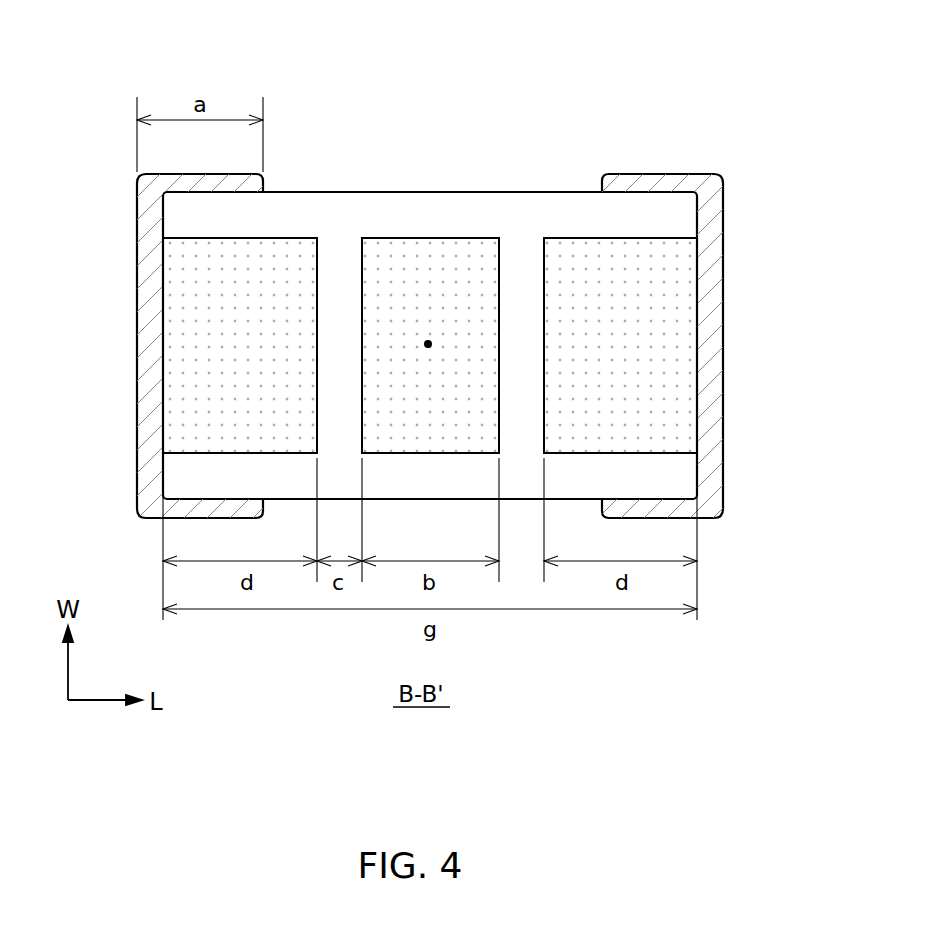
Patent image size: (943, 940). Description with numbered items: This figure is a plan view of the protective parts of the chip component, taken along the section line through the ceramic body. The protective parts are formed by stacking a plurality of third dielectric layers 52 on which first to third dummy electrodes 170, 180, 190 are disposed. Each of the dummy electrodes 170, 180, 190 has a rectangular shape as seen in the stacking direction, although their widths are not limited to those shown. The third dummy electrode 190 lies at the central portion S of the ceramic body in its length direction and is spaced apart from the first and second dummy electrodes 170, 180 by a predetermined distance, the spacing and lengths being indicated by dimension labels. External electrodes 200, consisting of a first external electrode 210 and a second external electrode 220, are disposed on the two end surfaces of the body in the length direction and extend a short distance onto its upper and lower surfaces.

The third dielectric layer 52 is at (529, 203).
The external electrodes 200 is at (471, 262).
The first external electrode 210 is at (248, 182).
The second external electrode 220 is at (270, 38).
The first dummy electrode 170 is at (178, 350).
The second dummy electrode 180 is at (678, 343).
The third dummy electrode 190 is at (447, 258).
The central portion S is at (428, 343).